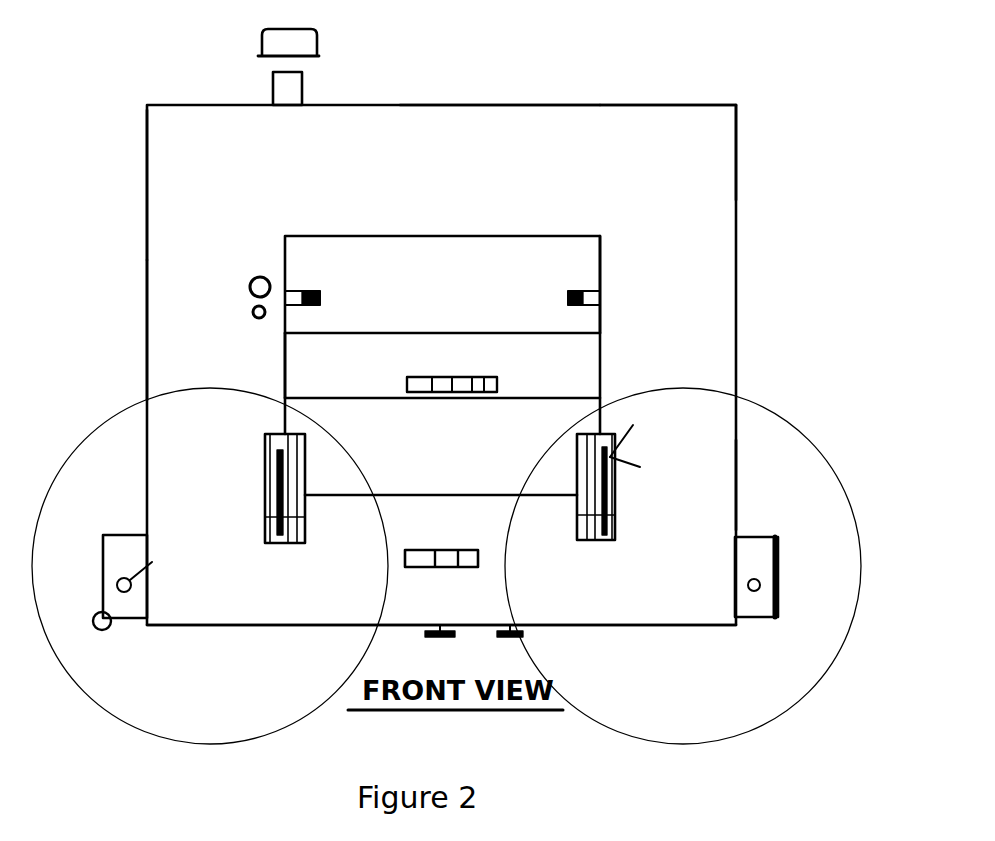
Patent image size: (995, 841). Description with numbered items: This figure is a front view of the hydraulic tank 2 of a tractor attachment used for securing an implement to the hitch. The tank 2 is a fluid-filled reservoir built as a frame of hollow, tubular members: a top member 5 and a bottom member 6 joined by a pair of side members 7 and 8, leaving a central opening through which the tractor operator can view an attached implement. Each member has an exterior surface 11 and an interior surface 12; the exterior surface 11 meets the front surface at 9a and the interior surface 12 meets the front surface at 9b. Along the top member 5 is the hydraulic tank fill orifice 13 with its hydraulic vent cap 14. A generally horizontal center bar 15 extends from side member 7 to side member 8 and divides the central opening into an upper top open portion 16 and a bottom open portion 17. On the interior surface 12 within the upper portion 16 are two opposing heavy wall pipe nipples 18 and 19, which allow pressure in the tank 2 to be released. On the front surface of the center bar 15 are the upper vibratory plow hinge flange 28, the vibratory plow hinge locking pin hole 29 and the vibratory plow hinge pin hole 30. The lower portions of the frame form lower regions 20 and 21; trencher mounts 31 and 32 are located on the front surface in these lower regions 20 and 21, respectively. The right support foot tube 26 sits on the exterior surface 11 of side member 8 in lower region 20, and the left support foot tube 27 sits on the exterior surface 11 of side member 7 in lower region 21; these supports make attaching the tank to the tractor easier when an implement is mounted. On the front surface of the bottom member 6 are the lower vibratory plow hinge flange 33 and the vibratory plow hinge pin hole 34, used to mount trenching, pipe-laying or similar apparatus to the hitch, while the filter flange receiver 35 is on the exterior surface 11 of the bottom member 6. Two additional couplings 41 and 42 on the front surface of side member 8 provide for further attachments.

The hydraulic tank 2 is at (793, 130).
The top member 5 is at (503, 102).
The bottom member 6 is at (397, 630).
The side member 7 is at (737, 306).
The side member 8 is at (137, 317).
The contact location of exterior surface with front surface 9a is at (150, 240).
The contact location of interior surface with front surface 9b is at (317, 234).
The exterior surface 11 is at (617, 98).
The interior surface 12 is at (533, 243).
The hydraulic tank fill orifice 13 is at (310, 85).
The hydraulic vent cap 14 is at (317, 36).
The center bar 15 is at (314, 365).
The upper top open portion 16 is at (442, 287).
The bottom open portion 17 is at (442, 446).
The heavy wall pipe nipple 18 is at (320, 294).
The heavy wall pipe nipple 19 is at (568, 293).
The lower region 20 is at (803, 425).
The lower region 21 is at (205, 566).
The right support foot tube 26 is at (762, 613).
The left support foot tube 27 is at (95, 627).
The upper vibratory plow hinge flange 28 is at (413, 378).
The vibratory plow hinge locking pin hole 29 is at (480, 373).
The vibratory plow hinge pin hole 30 is at (452, 392).
The trencher mount 31 is at (277, 515).
The trencher mount 32 is at (617, 507).
The lower vibratory plow hinge flange 33 is at (418, 550).
The vibratory plow hinge pin hole 34 is at (445, 550).
The filter flange receiver 35 is at (517, 630).
The coupling 41 is at (245, 313).
The coupling 42 is at (253, 273).